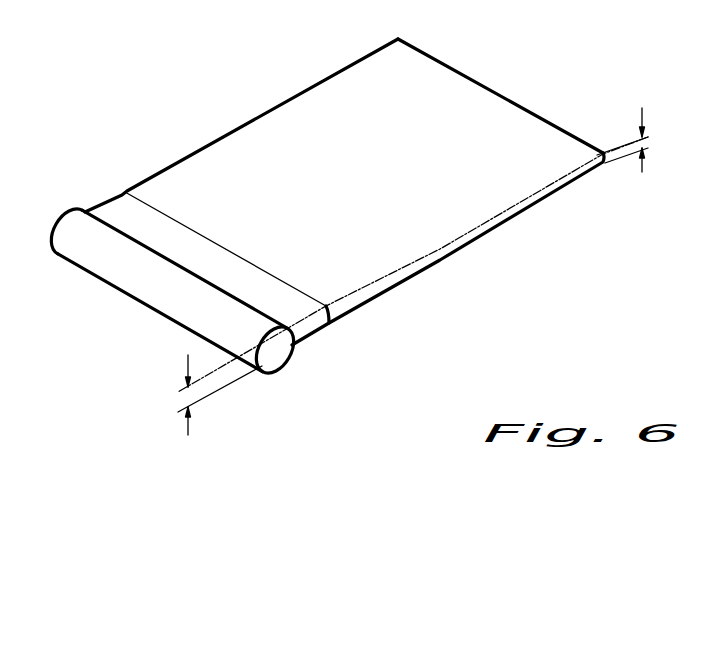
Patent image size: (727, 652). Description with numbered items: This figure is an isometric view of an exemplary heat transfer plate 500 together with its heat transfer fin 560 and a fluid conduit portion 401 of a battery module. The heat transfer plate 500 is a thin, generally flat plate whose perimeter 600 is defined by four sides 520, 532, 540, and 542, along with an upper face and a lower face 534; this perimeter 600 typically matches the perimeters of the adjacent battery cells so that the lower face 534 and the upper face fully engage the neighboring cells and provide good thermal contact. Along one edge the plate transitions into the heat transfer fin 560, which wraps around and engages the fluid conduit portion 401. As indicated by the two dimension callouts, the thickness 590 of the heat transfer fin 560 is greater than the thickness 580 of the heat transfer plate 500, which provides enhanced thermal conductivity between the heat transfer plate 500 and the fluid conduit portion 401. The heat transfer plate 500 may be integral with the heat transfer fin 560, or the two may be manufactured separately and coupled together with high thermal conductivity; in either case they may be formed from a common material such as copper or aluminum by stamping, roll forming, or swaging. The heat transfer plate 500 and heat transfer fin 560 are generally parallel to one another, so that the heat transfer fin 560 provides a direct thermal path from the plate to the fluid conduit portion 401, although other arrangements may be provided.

The fluid conduit portion 401 is at (176, 294).
The heat transfer plate 500 is at (341, 210).
The side 520 is at (503, 96).
The side 532 is at (438, 259).
The lower face 534 is at (360, 312).
The side 540 is at (208, 237).
The side 542 is at (317, 85).
The heat transfer fin 560 is at (112, 210).
The thickness of the heat transfer plate 580 is at (630, 126).
The thickness of the heat transfer fin 590 is at (214, 410).
The perimeter 600 is at (213, 140).